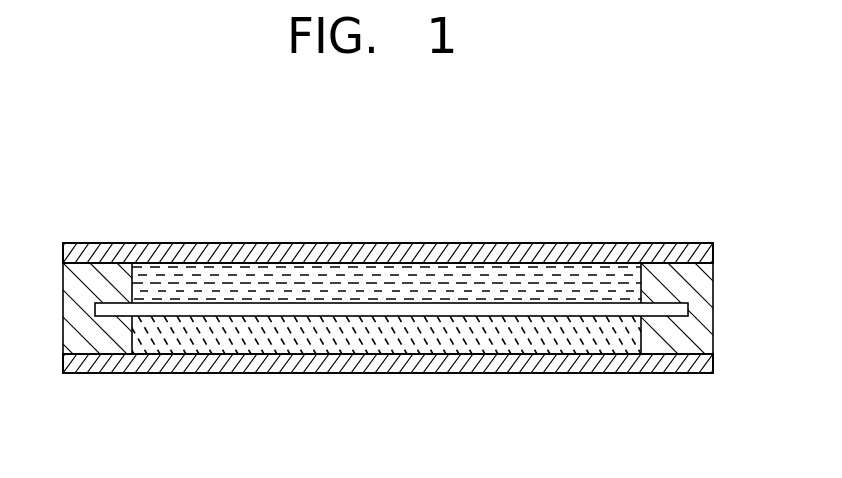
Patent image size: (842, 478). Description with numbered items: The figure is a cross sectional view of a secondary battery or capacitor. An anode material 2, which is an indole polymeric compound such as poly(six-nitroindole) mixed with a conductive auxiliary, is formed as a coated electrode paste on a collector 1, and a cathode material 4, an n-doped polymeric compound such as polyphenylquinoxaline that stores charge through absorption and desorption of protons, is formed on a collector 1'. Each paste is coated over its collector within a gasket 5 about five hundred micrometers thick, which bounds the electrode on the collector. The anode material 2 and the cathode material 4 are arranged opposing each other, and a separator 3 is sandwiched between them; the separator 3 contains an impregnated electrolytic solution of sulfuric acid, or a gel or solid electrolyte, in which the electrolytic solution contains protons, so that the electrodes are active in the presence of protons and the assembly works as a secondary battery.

The collector 1 is at (388, 230).
The collector 1' is at (388, 390).
The anode material 2 is at (313, 287).
The separator 3 is at (426, 310).
The cathode material 4 is at (483, 340).
The gasket 5 is at (695, 292).